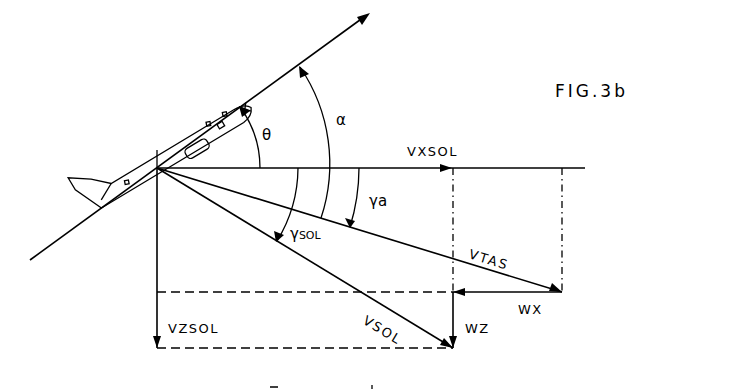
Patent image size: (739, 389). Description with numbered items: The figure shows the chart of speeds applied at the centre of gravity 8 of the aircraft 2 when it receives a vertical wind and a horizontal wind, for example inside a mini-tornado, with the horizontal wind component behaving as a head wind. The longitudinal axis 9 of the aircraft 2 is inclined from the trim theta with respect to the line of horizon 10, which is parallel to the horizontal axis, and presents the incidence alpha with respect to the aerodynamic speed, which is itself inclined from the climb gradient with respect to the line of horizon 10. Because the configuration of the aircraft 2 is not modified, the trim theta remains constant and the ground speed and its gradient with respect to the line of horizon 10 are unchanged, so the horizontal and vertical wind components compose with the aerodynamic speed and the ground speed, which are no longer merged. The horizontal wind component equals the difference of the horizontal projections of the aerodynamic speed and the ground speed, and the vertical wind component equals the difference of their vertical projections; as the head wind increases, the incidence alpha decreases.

The aircraft 2 is at (215, 110).
The centre of gravity 8 is at (157, 150).
The longitudinal axis 9 is at (307, 53).
The line of horizon 10 is at (488, 166).